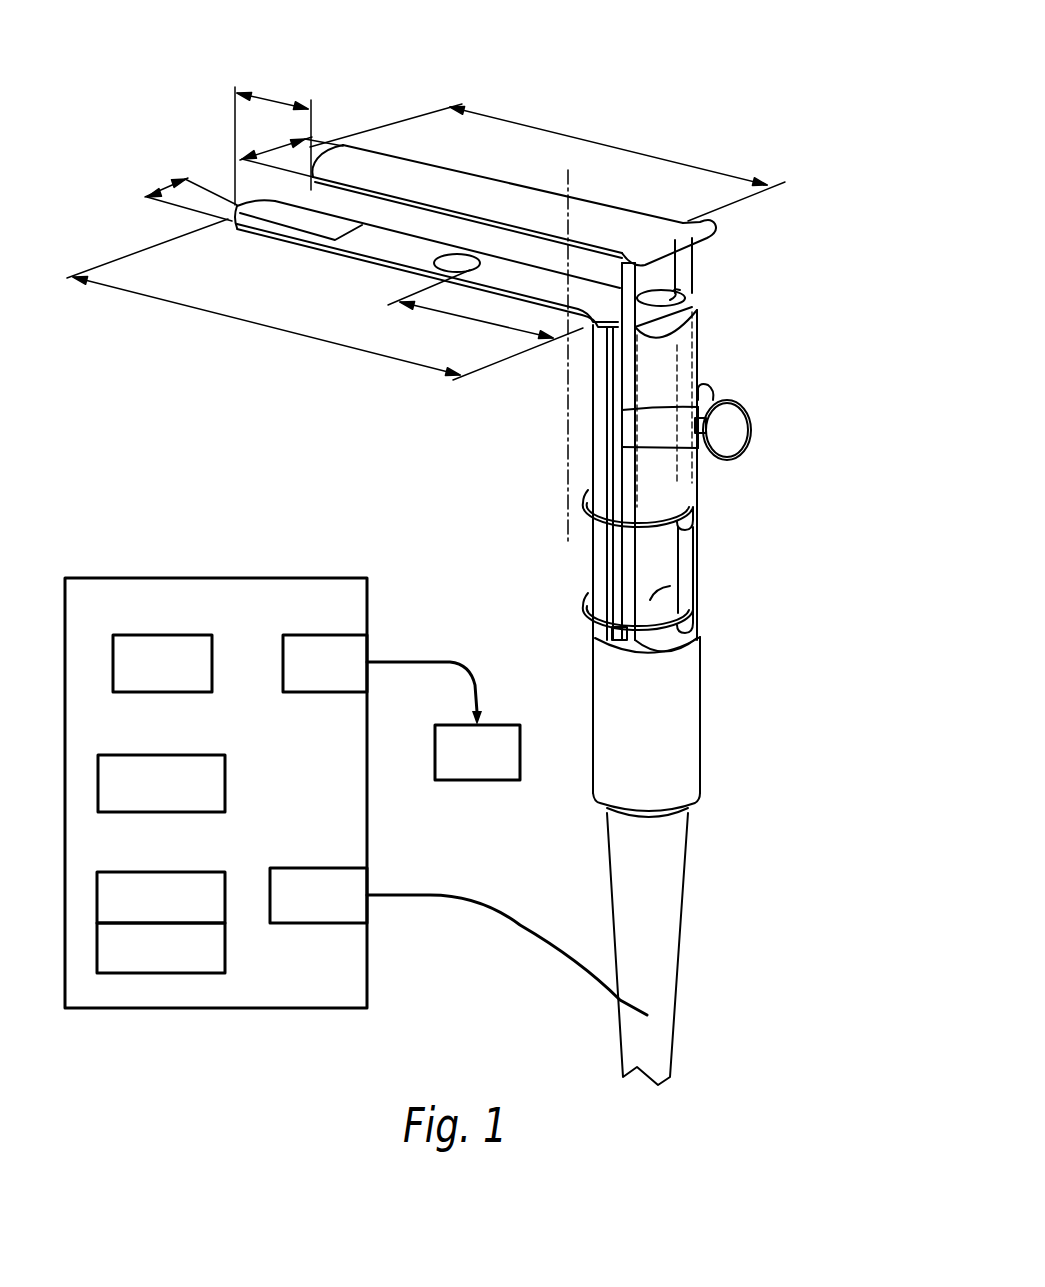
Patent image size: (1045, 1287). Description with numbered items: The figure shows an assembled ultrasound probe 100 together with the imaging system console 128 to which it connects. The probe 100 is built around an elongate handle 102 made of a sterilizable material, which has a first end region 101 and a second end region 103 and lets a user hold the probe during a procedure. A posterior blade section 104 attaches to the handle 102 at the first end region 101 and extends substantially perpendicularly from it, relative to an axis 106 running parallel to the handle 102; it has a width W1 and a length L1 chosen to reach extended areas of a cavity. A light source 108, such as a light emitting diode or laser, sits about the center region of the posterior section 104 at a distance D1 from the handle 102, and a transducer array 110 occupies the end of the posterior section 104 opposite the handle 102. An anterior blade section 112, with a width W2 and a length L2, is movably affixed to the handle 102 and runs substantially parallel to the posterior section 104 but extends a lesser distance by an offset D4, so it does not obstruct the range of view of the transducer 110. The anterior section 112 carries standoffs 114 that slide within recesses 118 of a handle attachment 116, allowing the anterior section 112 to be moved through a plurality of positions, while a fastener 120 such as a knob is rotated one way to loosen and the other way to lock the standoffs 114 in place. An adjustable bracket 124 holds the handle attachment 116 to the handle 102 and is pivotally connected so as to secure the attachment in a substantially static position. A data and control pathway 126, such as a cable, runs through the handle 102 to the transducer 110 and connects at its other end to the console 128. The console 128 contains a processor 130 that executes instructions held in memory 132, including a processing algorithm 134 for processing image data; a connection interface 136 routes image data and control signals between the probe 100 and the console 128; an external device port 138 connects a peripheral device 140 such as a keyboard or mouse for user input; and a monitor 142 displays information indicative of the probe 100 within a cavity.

The ultrasound probe 100 is at (613, 64).
The first end region 101 is at (745, 231).
The handle 102 is at (655, 727).
The second end region 103 is at (715, 823).
The posterior blade section 104 is at (343, 258).
The axis 106 is at (563, 438).
The light source 108 is at (445, 258).
The transducer array 110 is at (307, 215).
The anterior blade section 112 is at (470, 188).
The standoffs 114 is at (688, 265).
The handle attachment 116 is at (653, 553).
The recesses 118 is at (690, 292).
The fastener 120 is at (730, 432).
The adjustable bracket 124 is at (652, 595).
The data and control pathway 126 is at (658, 957).
The imaging system console 128 is at (210, 577).
The processor 130 is at (180, 755).
The memory 132 is at (178, 872).
The processing algorithm 134 is at (225, 948).
The connection interface 136 is at (338, 868).
The external device port 138 is at (338, 635).
The peripheral device 140 is at (508, 723).
The monitor 142 is at (175, 635).
The length L1 is at (270, 327).
The length L2 is at (609, 147).
The width W1 is at (168, 187).
The width W2 is at (275, 147).
The distance D1 is at (480, 322).
The distance D4 is at (273, 100).